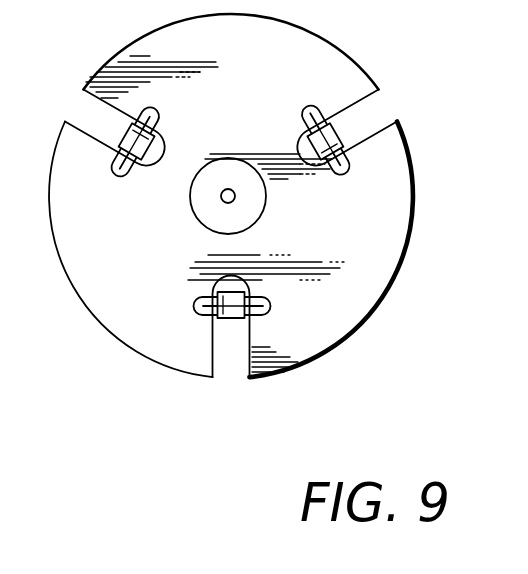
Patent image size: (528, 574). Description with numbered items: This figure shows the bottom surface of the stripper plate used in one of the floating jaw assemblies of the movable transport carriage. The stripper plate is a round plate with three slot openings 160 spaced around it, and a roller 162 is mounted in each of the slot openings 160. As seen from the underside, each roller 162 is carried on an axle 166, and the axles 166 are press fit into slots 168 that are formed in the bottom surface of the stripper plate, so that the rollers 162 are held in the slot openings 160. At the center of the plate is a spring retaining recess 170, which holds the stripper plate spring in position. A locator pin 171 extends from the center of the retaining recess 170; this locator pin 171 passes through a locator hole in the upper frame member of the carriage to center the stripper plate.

The slot openings 160 is at (392, 102).
The rollers 162 is at (237, 322).
The axles 166 is at (128, 172).
The slots 168 is at (158, 118).
The spring retaining recess 170 is at (267, 203).
The locator pin 171 is at (221, 203).